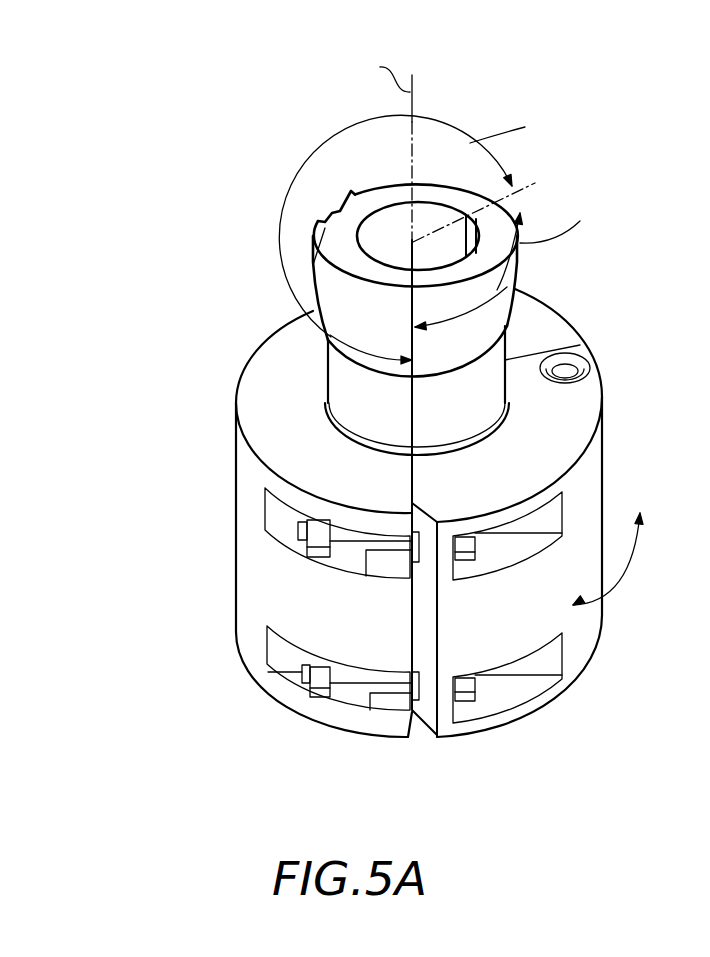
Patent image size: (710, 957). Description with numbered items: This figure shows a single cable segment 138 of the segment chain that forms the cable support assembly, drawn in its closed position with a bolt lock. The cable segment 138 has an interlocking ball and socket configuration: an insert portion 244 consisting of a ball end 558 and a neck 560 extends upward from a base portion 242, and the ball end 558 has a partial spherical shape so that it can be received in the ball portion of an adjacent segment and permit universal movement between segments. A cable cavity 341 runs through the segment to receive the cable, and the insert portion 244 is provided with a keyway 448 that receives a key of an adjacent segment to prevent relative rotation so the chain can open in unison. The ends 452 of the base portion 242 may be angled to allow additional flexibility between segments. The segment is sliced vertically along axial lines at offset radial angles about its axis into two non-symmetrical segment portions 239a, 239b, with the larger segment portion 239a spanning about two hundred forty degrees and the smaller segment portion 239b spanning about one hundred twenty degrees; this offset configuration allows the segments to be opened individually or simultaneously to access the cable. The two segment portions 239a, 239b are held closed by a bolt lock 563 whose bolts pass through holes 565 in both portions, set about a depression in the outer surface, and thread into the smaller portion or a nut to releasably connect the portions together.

The cable segment 138 is at (487, 93).
The cable cavity 341 is at (382, 216).
The keyway 448 is at (340, 210).
The insert portion 244 is at (310, 276).
The ball end 558 is at (502, 292).
The neck 560 is at (340, 378).
The ends of the base portion 452 is at (581, 404).
The larger segment portion 239a is at (247, 580).
The smaller segment portion 239b is at (577, 662).
The base portion 242 is at (248, 632).
The holes 565 is at (298, 522).
The bolt lock 563 is at (415, 710).